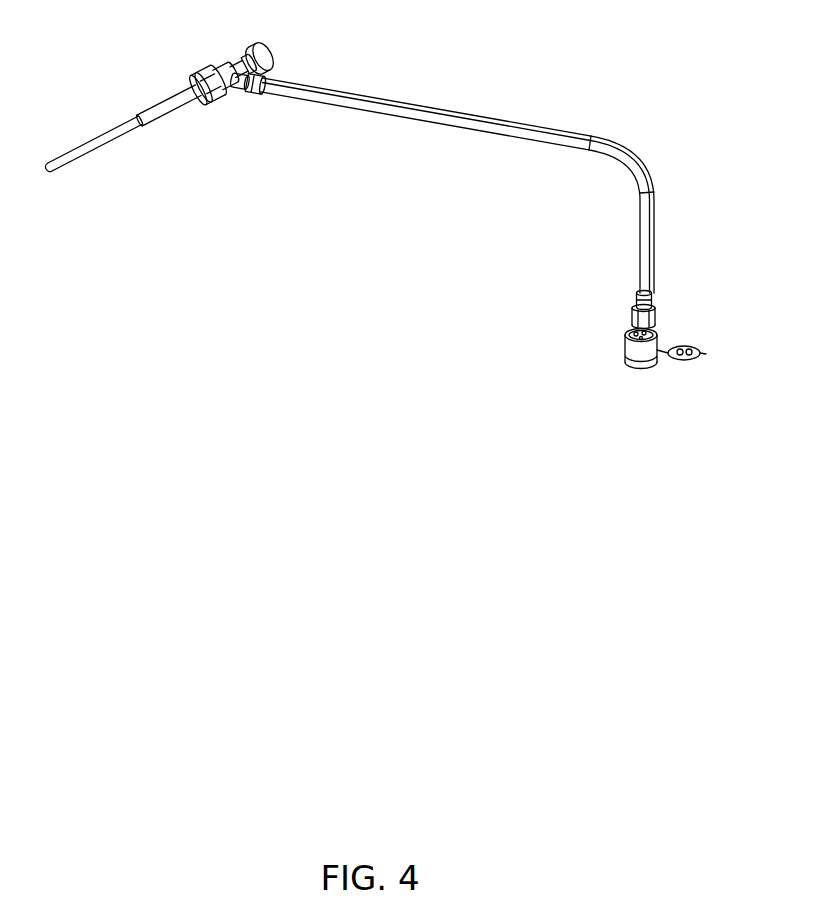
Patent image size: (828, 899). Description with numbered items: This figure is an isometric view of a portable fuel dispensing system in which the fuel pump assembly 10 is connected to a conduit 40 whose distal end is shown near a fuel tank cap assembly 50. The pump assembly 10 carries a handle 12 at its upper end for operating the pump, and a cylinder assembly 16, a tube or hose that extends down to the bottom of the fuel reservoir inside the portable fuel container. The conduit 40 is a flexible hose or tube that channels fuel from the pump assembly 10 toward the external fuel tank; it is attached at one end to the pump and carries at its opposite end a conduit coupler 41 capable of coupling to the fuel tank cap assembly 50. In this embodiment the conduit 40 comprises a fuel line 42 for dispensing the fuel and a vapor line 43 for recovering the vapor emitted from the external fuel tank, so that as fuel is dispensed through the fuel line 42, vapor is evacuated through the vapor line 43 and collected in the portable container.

The fuel pump assembly 10 is at (206, 68).
The handle 12 is at (262, 50).
The cylinder assembly 16 is at (112, 140).
The conduit 40 is at (537, 130).
The conduit coupler 41 is at (632, 317).
The fuel line 42 is at (240, 96).
The vapor line 43 is at (273, 83).
The fuel tank cap assembly 50 is at (625, 352).